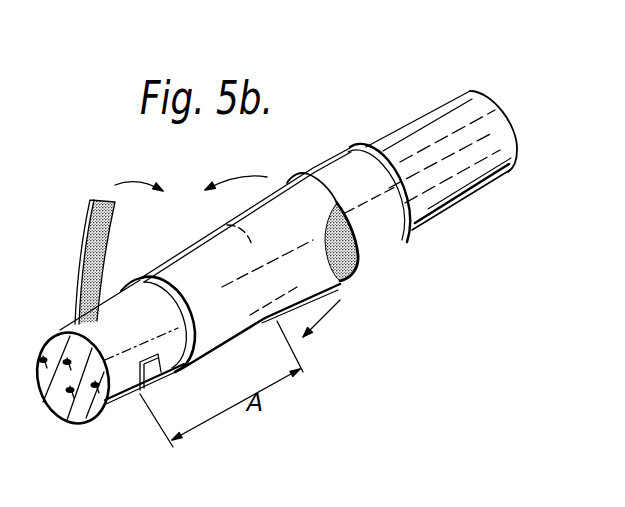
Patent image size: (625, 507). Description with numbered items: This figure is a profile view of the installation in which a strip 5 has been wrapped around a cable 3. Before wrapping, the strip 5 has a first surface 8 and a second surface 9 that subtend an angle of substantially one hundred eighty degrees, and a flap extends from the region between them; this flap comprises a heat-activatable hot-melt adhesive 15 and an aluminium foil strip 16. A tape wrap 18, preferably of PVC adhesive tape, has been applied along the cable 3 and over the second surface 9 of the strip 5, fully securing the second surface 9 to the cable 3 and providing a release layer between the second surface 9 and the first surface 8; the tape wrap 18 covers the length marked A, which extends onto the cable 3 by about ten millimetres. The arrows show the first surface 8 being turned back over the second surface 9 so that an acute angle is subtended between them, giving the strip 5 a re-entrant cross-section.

The cable 3 is at (439, 118).
The strip 5 is at (245, 344).
The first surface 8 is at (285, 193).
The second surface 9 is at (174, 258).
The heat-activatable adhesive 15 is at (345, 248).
The foil strip 16 is at (332, 167).
The tape wrap 18 is at (103, 200).